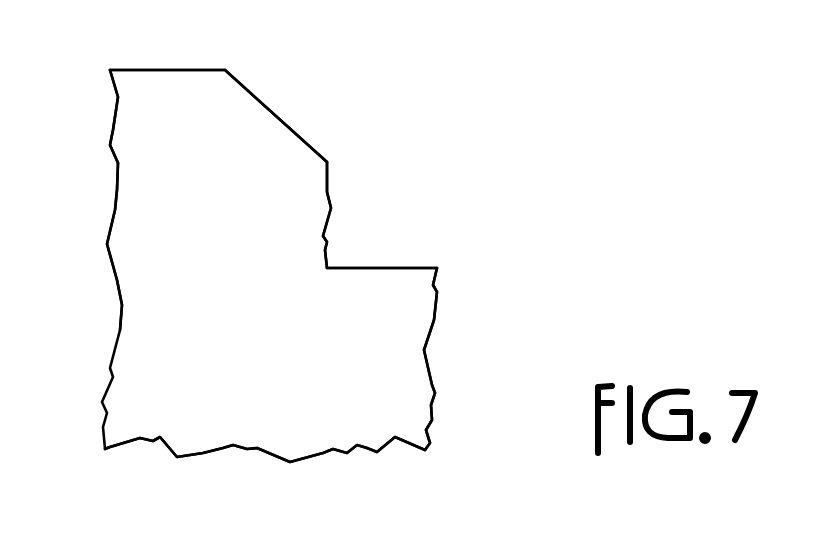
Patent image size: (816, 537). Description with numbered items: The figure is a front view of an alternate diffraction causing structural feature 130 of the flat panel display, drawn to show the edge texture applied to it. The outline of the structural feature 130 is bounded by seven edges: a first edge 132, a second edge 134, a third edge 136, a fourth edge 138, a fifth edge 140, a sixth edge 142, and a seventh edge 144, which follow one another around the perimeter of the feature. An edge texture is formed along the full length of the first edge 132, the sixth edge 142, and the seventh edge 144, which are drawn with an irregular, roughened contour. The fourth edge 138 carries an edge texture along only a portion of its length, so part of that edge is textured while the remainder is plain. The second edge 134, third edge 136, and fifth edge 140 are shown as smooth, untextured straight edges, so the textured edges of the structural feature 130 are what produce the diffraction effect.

The diffraction causing structural feature 130 is at (372, 125).
The first edge 132 is at (107, 244).
The second edge 134 is at (128, 70).
The third edge 136 is at (255, 94).
The fourth edge 138 is at (328, 206).
The fifth edge 140 is at (360, 268).
The sixth edge 142 is at (423, 348).
The seventh edge 144 is at (225, 450).